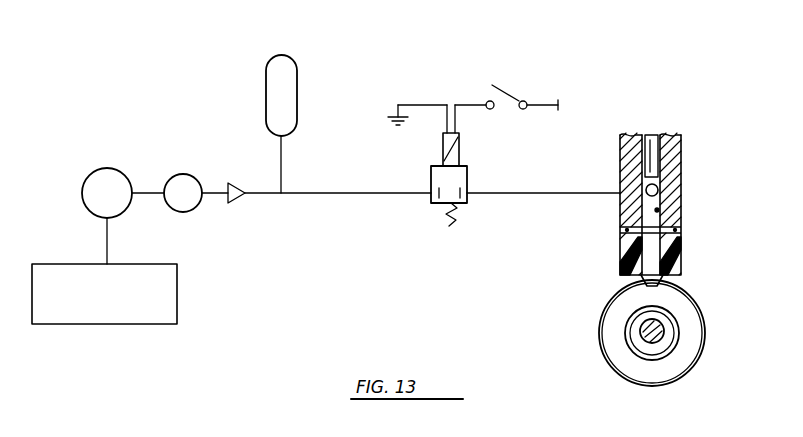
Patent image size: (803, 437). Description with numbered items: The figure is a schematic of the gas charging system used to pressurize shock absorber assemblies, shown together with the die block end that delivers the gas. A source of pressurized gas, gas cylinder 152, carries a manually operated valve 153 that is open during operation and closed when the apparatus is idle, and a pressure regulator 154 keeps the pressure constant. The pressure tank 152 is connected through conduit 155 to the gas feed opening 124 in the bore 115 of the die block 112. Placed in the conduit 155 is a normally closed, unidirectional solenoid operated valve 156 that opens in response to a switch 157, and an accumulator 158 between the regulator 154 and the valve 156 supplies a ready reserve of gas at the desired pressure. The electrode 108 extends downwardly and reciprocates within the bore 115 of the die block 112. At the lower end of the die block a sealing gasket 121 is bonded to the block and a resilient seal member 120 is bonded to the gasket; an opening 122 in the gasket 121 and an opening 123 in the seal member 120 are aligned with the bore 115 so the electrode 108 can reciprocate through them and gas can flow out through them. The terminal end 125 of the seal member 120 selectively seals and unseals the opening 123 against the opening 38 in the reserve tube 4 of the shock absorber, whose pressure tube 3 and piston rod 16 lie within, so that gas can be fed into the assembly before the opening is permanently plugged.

The gas cylinder 152 is at (177, 300).
The manually operated valve 153 is at (107, 168).
The pressure regulator 154 is at (183, 174).
The conduit 155 is at (337, 193).
The solenoid operated valve 156 is at (456, 175).
The switch 157 is at (508, 88).
The accumulator 158 is at (292, 58).
The electrode 108 is at (620, 147).
The die block 112 is at (677, 155).
The gas feed opening 124 is at (657, 190).
The bore 115 is at (659, 210).
The sealing gasket 121 is at (678, 232).
The resilient seal member 120 is at (681, 248).
The opening in gasket 122 is at (630, 232).
The opening in seal member 123 is at (645, 253).
The terminal end 125 is at (621, 283).
The opening 38 is at (652, 290).
The reserve tube 4 is at (703, 343).
The pressure tube 3 is at (672, 348).
The piston rod 16 is at (657, 342).